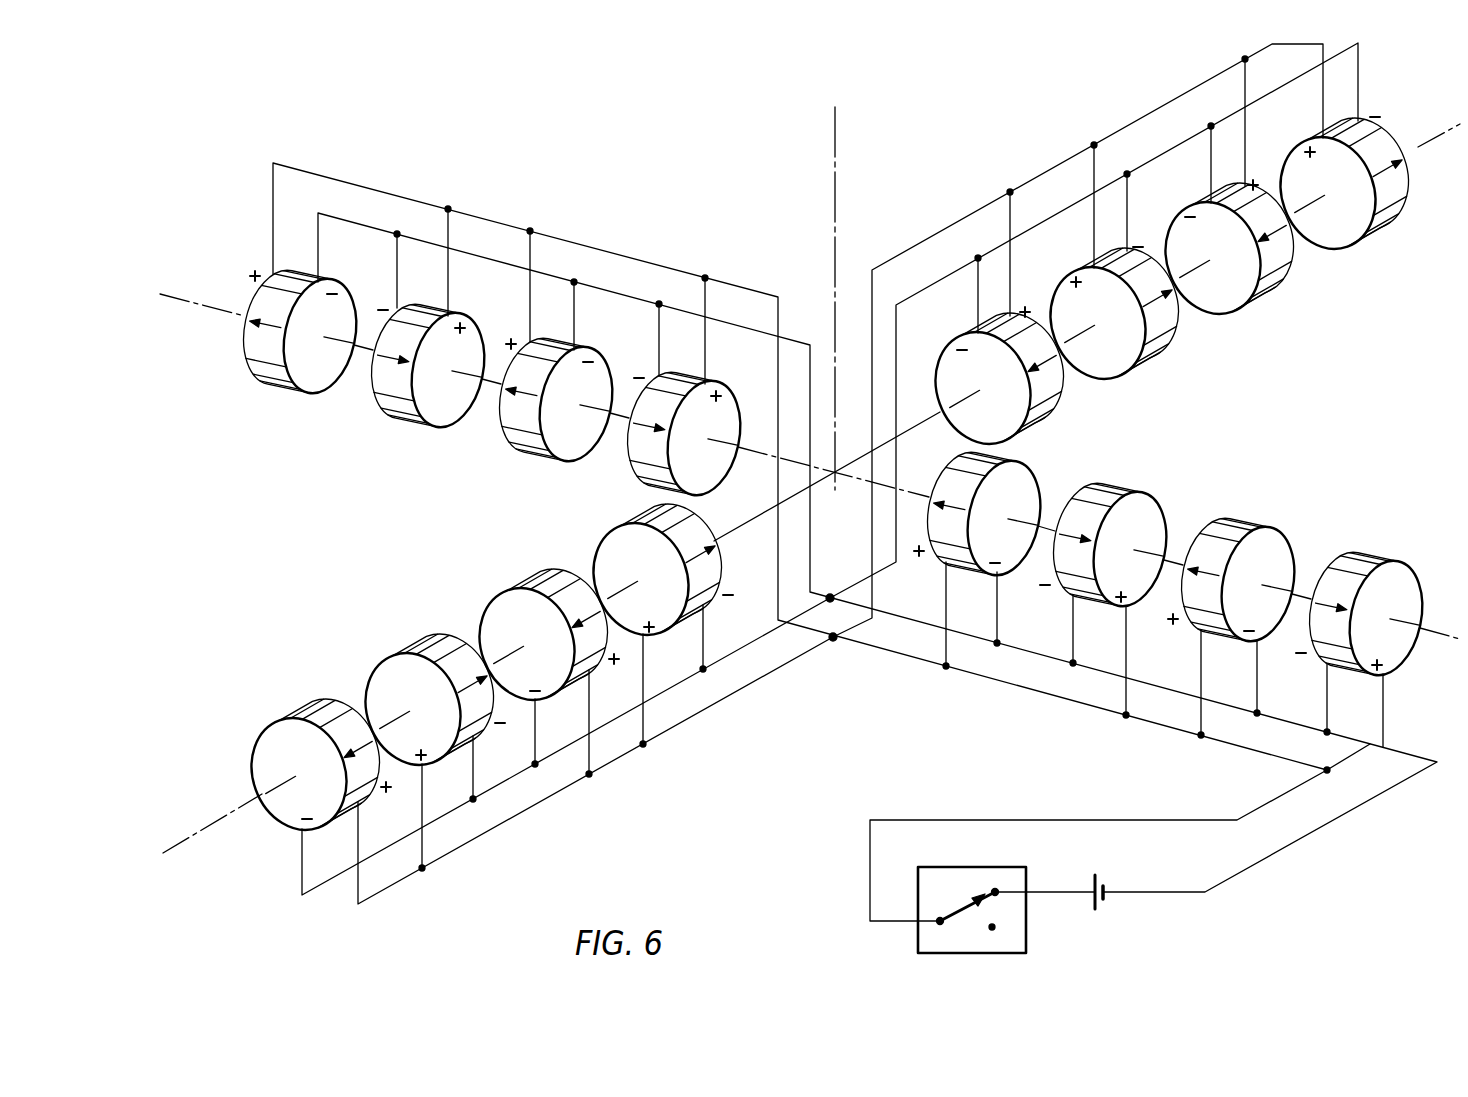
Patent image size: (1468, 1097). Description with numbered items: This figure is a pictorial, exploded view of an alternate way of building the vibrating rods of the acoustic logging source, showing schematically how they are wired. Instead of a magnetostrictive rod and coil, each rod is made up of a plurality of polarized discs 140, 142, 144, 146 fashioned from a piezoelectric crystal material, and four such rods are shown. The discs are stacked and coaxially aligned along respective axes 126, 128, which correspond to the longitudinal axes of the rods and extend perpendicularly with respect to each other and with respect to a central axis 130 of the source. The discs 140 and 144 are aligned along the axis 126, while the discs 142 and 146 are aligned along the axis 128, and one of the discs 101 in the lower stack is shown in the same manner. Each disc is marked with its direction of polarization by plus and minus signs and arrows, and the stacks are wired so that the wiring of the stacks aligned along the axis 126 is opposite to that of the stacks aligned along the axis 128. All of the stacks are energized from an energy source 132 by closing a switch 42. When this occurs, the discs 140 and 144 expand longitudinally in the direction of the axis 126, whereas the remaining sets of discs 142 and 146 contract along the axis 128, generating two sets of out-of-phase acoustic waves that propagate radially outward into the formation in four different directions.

The switch 42 is at (918, 936).
The magnet 101 is at (357, 780).
The axis 126 is at (190, 837).
The axis 128 is at (166, 292).
The vertical axis 130 is at (838, 130).
The energy source 132 is at (1098, 905).
The polarized discs 140 is at (486, 665).
The polarized discs 142 is at (1240, 517).
The polarized discs 144 is at (1163, 352).
The polarized discs 146 is at (282, 390).